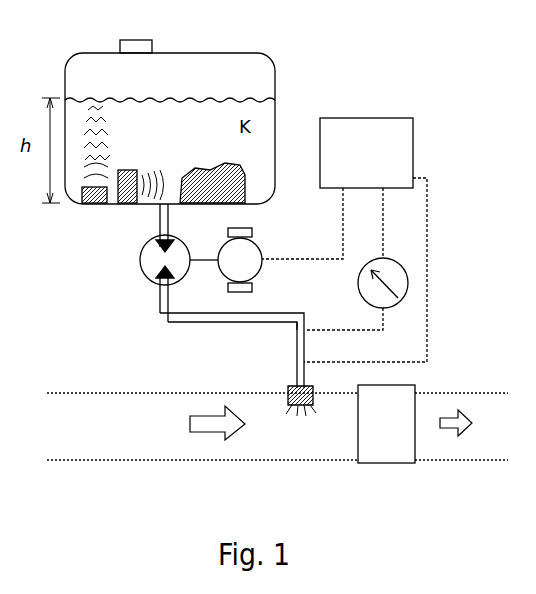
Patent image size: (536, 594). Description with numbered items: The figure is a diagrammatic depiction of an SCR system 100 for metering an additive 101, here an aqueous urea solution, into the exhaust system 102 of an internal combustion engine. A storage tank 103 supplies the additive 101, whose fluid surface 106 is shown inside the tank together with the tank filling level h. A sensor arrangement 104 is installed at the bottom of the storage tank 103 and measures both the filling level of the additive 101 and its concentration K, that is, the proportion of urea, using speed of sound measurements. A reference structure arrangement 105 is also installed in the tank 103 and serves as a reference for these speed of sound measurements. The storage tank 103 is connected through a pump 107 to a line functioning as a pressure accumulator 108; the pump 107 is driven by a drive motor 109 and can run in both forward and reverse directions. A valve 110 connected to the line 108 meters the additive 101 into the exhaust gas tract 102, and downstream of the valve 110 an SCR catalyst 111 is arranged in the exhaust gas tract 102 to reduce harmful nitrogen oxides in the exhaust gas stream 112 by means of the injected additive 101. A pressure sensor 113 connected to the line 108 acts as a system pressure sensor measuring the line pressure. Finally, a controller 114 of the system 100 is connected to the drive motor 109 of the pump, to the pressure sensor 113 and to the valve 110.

The SCR system 100 is at (421, 57).
The additive 101 is at (170, 118).
The exhaust system 102 is at (90, 461).
The storage tank 103 is at (278, 72).
The sensor arrangement 104 is at (128, 206).
The reference structure arrangement 105 is at (247, 165).
The surface 106 is at (219, 97).
The pump 107 is at (147, 272).
The pressure accumulator 108 is at (212, 325).
The drive motor 109 is at (252, 245).
The valve 110 is at (153, 165).
The SCR catalyst 111 is at (373, 464).
The exhaust gas stream 112 is at (205, 433).
The pressure sensor 113 is at (358, 284).
The controller 114 is at (414, 138).